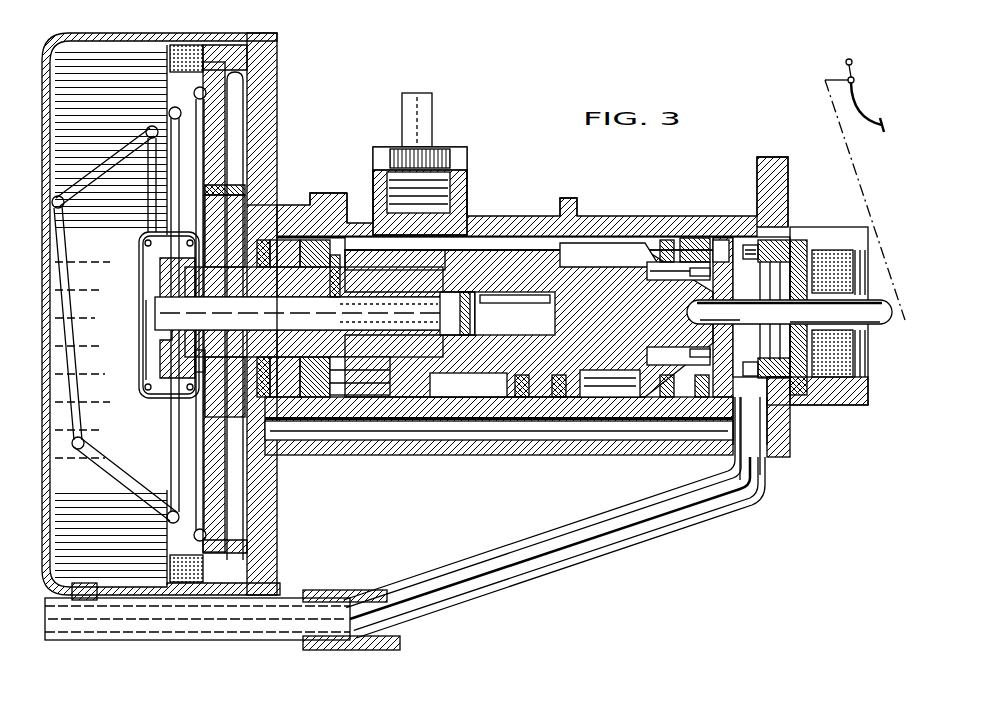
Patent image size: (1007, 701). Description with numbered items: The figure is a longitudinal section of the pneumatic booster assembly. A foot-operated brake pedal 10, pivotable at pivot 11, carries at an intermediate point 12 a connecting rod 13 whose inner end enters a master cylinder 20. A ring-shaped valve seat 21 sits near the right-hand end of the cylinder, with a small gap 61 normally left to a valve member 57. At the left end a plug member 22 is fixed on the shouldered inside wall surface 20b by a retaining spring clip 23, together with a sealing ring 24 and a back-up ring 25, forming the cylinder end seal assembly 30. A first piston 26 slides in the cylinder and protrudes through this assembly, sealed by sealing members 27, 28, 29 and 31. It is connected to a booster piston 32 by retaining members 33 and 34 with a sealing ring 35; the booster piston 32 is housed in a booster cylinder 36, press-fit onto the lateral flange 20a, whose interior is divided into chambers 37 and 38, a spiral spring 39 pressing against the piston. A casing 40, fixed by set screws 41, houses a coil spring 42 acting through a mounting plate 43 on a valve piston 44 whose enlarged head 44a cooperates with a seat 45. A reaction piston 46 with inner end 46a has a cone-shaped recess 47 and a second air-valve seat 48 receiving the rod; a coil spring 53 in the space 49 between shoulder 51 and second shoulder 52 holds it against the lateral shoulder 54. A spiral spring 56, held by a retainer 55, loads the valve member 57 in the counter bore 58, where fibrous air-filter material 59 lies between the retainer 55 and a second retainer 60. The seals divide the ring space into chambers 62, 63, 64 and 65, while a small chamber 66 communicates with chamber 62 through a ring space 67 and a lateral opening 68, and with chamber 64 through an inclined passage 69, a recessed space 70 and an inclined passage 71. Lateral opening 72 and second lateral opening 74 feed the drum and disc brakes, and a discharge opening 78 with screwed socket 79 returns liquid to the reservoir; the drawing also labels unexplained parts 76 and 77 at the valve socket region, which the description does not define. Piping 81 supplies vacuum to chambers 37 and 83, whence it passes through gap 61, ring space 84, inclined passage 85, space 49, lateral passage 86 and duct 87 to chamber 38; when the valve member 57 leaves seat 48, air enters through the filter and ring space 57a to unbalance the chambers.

The brake pedal 10 is at (878, 124).
The pedal pivot 11 is at (863, 58).
The intermediate point 12 is at (854, 82).
The connecting rod 13 is at (900, 290).
The master cylinder 20 is at (627, 212).
The lateral flange 20a is at (262, 92).
The shouldered inside wall surface 20b is at (272, 198).
The valve seat 21 is at (752, 258).
The plug member 22 is at (276, 370).
The retaining spring clip 23 is at (262, 372).
The sealing ring 24 is at (304, 372).
The back-up ring 25 is at (315, 380).
The first piston 26 is at (510, 240).
The sealing member 27 is at (664, 240).
The sealing member 28 is at (560, 400).
The sealing member 29 is at (522, 400).
The cylinder end seal assembly 30 is at (312, 483).
The sealing member 31 is at (408, 440).
The booster piston 32 is at (178, 460).
The retaining member 33 is at (230, 375).
The retaining member 34 is at (242, 342).
The sealing ring 35 is at (210, 360).
The booster cylinder 36 is at (50, 480).
The booster chamber 37 is at (128, 525).
The booster chamber 38 is at (232, 524).
The spiral spring 39 is at (78, 420).
The casing 40 is at (140, 286).
The set screw 41 is at (214, 208).
The coil spring 42 is at (148, 362).
The mounting plate 43 is at (158, 310).
The valve piston 44 is at (300, 306).
The enlarged head 44a is at (455, 314).
The valve seat 45 is at (430, 252).
The reaction piston 46 is at (610, 326).
The inner end 46a is at (486, 374).
The cone-shaped recess 47 is at (789, 312).
The second air-valve seat 48 is at (740, 440).
The space 49 is at (690, 238).
The shoulder 51 is at (640, 280).
The second shoulder 52 is at (695, 290).
The coil spring 53 is at (660, 346).
The lateral shoulder 54 is at (748, 240).
The retainer 55 is at (825, 250).
The spiral spring 56 is at (798, 240).
The valve member 57 is at (790, 420).
The ring space 57a is at (780, 324).
The counter bore 58 is at (812, 405).
The fibrous air-filter material 59 is at (855, 405).
The second retainer 60 is at (862, 375).
The gap 61 is at (766, 262).
The chamber 62 is at (348, 193).
The chamber 63 is at (495, 240).
The chamber 64 is at (610, 400).
The chamber 65 is at (718, 240).
The chamber 66 is at (466, 336).
The ring space 67 is at (340, 310).
The lateral opening 68 is at (375, 290).
The inclined passage 69 is at (478, 300).
The recessed space 70 is at (512, 303).
The inclined passage 71 is at (570, 266).
The lateral opening 72 is at (325, 198).
The second lateral opening 74 is at (574, 197).
The spring 76 is at (448, 218).
The valve body 77 is at (380, 210).
The discharge opening 78 is at (448, 205).
The screwed socket 79 is at (410, 120).
The piping 81 is at (524, 566).
The chamber 83 is at (736, 240).
The ring space 84 is at (720, 313).
The inclined passage 85 is at (705, 345).
The lateral passage 86 is at (702, 400).
The duct 87 is at (460, 440).